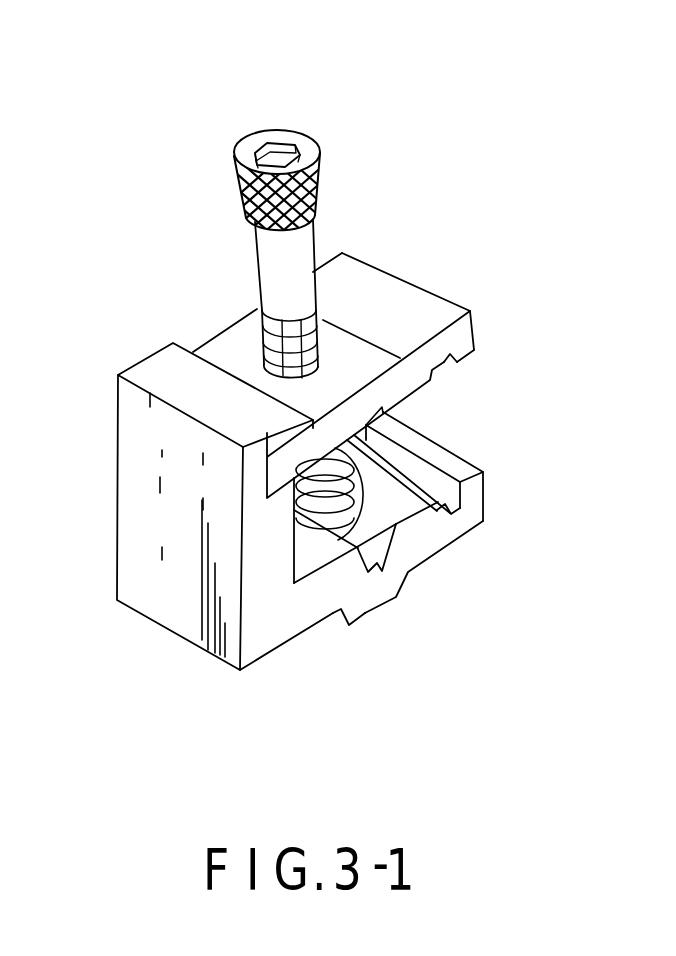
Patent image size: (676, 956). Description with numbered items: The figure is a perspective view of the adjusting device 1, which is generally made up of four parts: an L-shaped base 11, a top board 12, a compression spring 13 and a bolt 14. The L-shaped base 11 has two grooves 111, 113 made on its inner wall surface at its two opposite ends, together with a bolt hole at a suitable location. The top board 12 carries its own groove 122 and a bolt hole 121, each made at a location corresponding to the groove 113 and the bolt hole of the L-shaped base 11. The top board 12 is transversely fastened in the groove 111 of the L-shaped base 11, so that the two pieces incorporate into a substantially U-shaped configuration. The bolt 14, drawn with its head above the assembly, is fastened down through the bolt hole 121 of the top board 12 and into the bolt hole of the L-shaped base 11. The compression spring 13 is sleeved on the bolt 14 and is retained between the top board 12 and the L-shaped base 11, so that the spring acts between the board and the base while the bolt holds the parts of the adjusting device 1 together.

The adjusting device 1 is at (174, 668).
The L-shaped base 11 is at (365, 612).
The groove 111 is at (282, 477).
The groove 113 is at (377, 565).
The top board 12 is at (456, 302).
The bolt hole 121 is at (335, 356).
The groove 122 is at (443, 368).
The compression spring 13 is at (426, 477).
The bolt 14 is at (318, 236).